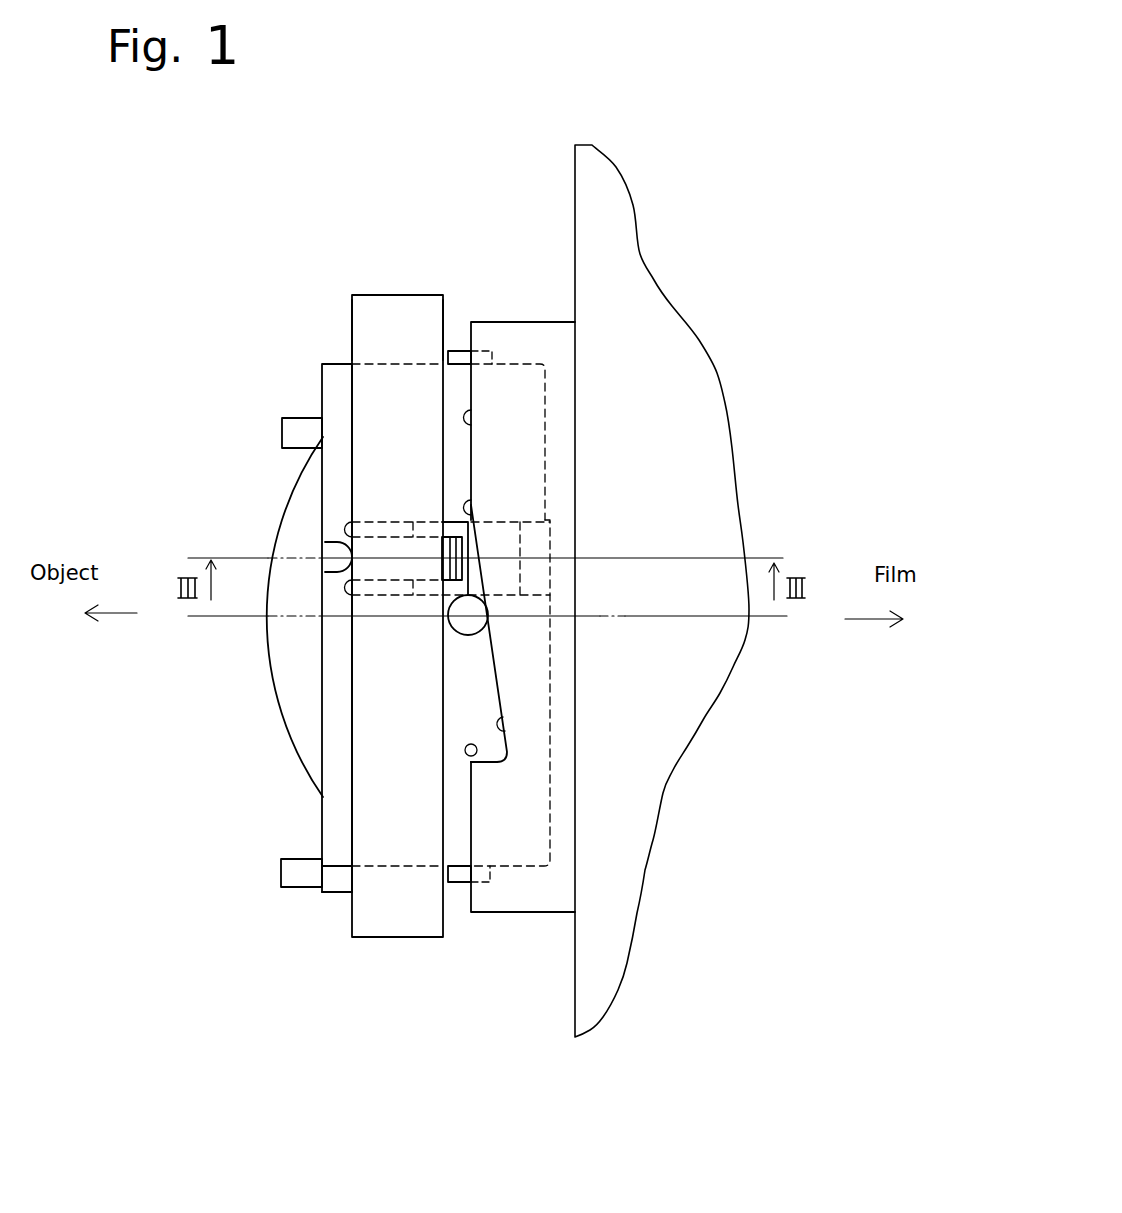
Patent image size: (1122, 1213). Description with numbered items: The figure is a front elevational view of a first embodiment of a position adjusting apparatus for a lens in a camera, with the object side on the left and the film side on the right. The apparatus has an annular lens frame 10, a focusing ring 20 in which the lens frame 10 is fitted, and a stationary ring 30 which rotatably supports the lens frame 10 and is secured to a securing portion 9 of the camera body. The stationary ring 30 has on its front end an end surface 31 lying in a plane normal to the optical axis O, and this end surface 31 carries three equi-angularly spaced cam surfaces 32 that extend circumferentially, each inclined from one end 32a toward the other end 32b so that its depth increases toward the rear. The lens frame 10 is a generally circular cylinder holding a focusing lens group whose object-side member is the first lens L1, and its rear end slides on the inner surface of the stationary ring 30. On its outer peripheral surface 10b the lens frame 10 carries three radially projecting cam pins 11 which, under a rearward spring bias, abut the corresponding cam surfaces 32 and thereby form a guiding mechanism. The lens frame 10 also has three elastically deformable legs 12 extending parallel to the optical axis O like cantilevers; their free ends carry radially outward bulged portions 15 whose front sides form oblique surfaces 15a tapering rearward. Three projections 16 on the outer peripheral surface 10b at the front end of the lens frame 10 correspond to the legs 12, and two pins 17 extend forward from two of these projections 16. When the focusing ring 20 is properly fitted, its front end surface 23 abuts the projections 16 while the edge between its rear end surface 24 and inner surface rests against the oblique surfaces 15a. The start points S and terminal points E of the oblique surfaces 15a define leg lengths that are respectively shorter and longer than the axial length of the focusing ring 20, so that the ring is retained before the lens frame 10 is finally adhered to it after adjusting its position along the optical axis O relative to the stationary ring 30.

The securing portion 9 is at (612, 186).
The lens frame 10 is at (330, 363).
The outer peripheral surface 10b is at (477, 693).
The cam pins 11 is at (458, 353).
The elastically deformable legs 12 is at (437, 570).
The bulged portions 15 is at (445, 520).
The oblique surfaces 15a is at (433, 533).
The projections 16 is at (330, 547).
The pins 17 is at (288, 432).
The focusing ring 20 is at (403, 303).
The front end surface 23 is at (345, 302).
The rear end surface 24 is at (445, 302).
The stationary ring 30 is at (538, 328).
The end surface 31 is at (473, 423).
The cam surfaces 32 is at (507, 735).
The one end of cam surface 32a is at (473, 510).
The other end of cam surface 32b is at (497, 762).
The start points of the oblique surfaces S is at (437, 540).
The terminal points of the oblique surfaces E is at (437, 573).
The first lens L1 is at (283, 668).
The optical axis O is at (215, 615).